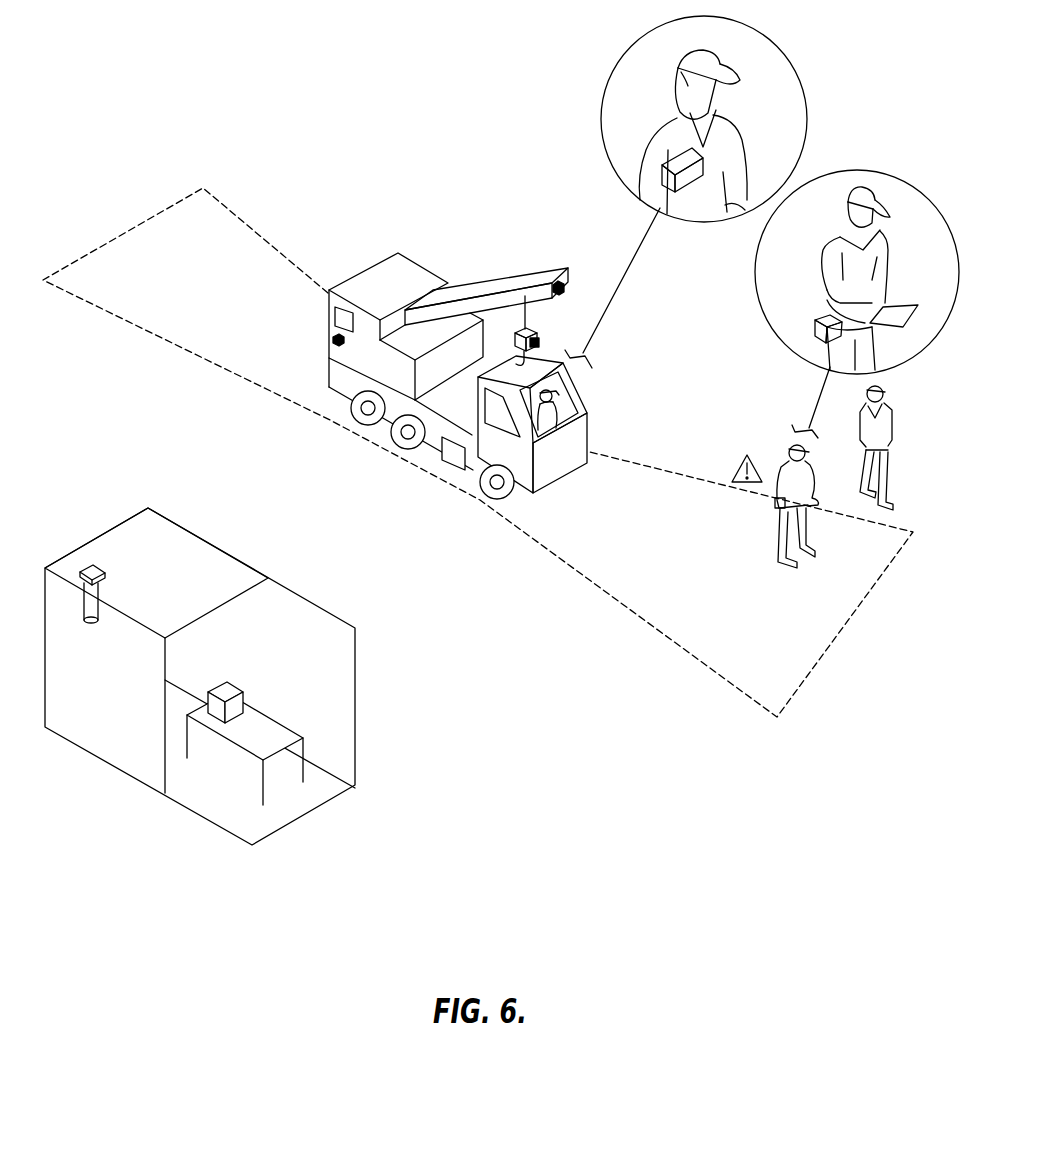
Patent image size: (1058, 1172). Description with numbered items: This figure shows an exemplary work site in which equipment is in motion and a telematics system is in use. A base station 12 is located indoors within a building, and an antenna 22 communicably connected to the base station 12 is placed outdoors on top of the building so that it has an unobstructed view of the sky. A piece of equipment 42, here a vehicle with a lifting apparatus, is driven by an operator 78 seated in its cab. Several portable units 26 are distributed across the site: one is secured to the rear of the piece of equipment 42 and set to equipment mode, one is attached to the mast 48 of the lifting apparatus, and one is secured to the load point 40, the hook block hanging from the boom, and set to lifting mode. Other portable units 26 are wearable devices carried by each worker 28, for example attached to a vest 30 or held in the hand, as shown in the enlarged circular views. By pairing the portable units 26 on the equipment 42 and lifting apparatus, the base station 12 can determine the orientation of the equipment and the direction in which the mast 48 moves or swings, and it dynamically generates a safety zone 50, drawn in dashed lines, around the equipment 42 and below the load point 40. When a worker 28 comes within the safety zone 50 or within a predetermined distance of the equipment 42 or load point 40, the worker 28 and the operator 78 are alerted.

The base station 12 is at (215, 712).
The antenna 22 is at (92, 566).
The portable unit 26 is at (540, 338).
The worker 28 is at (830, 531).
The vest 30 is at (671, 124).
The load point 40 is at (507, 318).
The piece of equipment 42 is at (362, 250).
The mast 48 is at (555, 265).
The safety zone 50 is at (186, 220).
The operator 78 is at (580, 401).